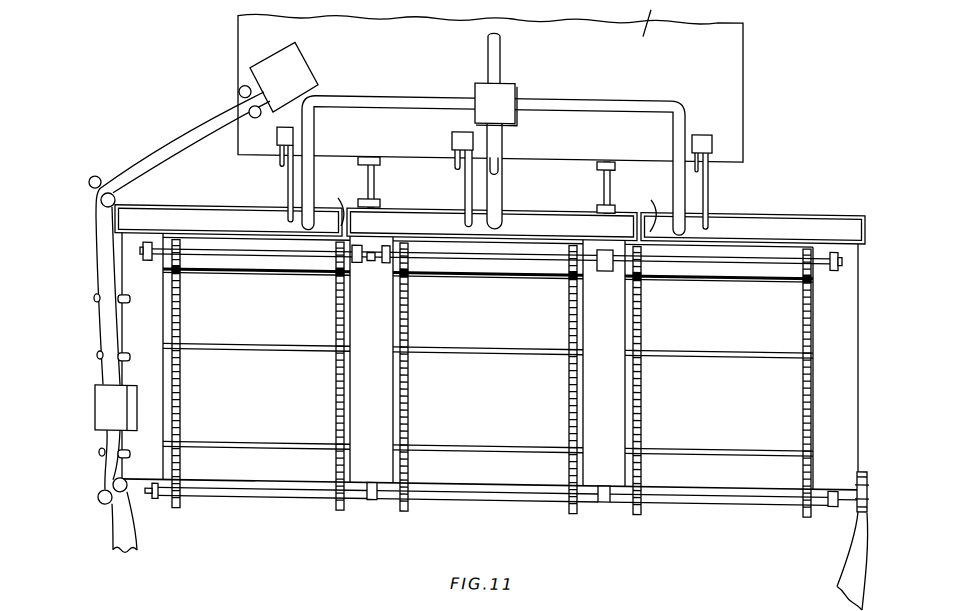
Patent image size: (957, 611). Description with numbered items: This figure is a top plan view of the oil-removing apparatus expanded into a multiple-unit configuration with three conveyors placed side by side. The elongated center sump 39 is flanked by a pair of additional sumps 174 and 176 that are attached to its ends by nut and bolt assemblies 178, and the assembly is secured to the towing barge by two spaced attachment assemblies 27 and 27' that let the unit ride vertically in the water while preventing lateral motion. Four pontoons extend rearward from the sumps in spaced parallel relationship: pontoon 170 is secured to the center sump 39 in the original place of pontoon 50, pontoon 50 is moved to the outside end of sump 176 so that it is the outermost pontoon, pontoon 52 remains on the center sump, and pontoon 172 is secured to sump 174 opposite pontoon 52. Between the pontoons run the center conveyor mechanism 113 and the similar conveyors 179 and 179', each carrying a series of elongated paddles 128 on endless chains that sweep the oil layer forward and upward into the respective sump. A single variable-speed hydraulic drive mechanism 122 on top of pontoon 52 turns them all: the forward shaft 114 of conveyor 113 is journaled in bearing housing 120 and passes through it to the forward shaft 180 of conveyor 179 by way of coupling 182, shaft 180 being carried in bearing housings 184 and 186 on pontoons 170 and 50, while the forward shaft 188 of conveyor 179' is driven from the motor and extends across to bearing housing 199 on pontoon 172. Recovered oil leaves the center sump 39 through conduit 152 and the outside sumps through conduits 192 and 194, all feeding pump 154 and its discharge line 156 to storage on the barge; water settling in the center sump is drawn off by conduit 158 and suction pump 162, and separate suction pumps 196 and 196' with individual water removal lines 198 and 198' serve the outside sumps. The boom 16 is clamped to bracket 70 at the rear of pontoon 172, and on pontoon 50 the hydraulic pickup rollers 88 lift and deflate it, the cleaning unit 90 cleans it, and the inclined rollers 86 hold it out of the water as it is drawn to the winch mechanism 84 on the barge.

The boom 16 is at (115, 547).
The attachment assembly 27 is at (388, 182).
The attachment assembly 27' is at (587, 187).
The sump 39 is at (515, 224).
The pontoon 50 is at (131, 334).
The pontoon 52 is at (592, 372).
The bracket 70 is at (856, 491).
The winch mechanism 84 is at (293, 69).
The inclined rollers 86 is at (239, 88).
The pickup rollers 88 is at (99, 500).
The cleaning unit 90 is at (95, 402).
The conveyor mechanism 113 is at (490, 496).
The forward shaft 114 is at (500, 248).
The bearing housing 120 is at (398, 262).
The drive mechanism 122 is at (606, 261).
The paddles 128 is at (264, 342).
The conduit 152 is at (503, 142).
The pump 154 is at (500, 90).
The discharge line 156 is at (490, 39).
The conduit 158 is at (465, 185).
The suction pump 162 is at (452, 128).
The pontoon 170 is at (359, 375).
The pontoon 172 is at (822, 368).
The sump 174 is at (805, 226).
The sump 176 is at (181, 221).
The nut and bolt assemblies 178 is at (487, 204).
The conveyor 179 is at (256, 512).
The conveyor 179' is at (719, 518).
The forward shaft 180 is at (249, 250).
The coupling 182 is at (370, 256).
The bearing housing 184 is at (337, 266).
The bearing housing 186 is at (146, 258).
The forward shaft 188 is at (710, 247).
The conduit 192 is at (595, 93).
The conduit 194 is at (392, 94).
The suction pump 196 is at (264, 152).
The suction pump 196' is at (712, 129).
The water removal line 198 is at (264, 183).
The water removal line 198' is at (728, 191).
The bearing housing 199 is at (832, 260).